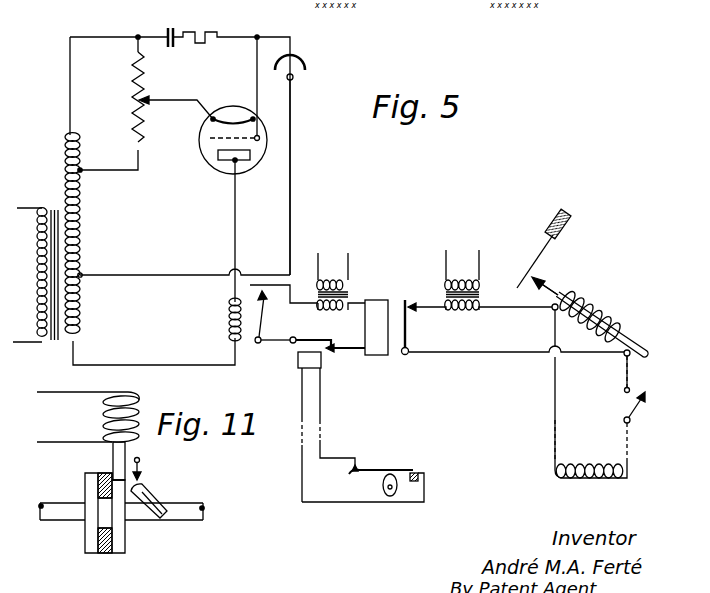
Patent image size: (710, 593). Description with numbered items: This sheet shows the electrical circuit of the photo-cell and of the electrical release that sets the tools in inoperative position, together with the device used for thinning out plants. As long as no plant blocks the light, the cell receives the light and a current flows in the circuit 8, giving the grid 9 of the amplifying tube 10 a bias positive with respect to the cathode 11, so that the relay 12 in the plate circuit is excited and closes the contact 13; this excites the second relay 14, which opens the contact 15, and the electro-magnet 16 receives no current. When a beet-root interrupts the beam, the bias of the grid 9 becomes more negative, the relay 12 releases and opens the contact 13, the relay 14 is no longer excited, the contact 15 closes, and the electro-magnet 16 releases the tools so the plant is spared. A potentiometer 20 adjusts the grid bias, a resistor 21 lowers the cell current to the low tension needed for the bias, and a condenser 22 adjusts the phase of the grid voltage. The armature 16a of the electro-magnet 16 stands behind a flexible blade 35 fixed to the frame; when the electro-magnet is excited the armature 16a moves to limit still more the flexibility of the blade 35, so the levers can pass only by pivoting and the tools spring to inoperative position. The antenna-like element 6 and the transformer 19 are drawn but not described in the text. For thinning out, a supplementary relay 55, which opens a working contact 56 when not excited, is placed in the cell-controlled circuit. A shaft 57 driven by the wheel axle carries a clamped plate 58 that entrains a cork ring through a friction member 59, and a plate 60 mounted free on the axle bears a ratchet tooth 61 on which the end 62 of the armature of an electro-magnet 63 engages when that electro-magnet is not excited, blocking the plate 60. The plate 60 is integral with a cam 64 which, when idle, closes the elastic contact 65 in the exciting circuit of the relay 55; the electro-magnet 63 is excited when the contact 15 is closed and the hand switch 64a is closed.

In FIG. 5, the antenna 6 is at (299, 58).
In FIG. 5, the circuit 8 is at (293, 170).
In FIG. 5, the grid 9 is at (210, 137).
In FIG. 5, the amplifying tube 10 is at (201, 156).
In FIG. 5, the cathode 11 is at (227, 122).
In FIG. 5, the relay 12 is at (228, 323).
In FIG. 5, the contact 13 is at (262, 318).
In FIG. 5, the second relay 14 is at (380, 349).
In FIG. 5, the contact 15 is at (410, 330).
In FIG. 5, the electro-magnet 16 is at (641, 346).
In FIG. 5, the armature 16a is at (558, 291).
In FIG. 5, the transformer 19 is at (46, 249).
In FIG. 5, the potentiometer 20 is at (145, 137).
In FIG. 5, the resistor 21 is at (207, 33).
In FIG. 5, the condenser 22 is at (174, 27).
In FIG. 5, the blade 35 is at (541, 254).
In FIG. 5, the supplementary relay 55 is at (316, 360).
In FIG. 5, the working contact 56 is at (312, 334).
In FIG. 11, the shaft 57 is at (52, 508).
In FIG. 11, the plate 58 is at (88, 531).
In FIG. 11, the friction member 59 is at (104, 555).
In FIG. 11, the plate 60 is at (118, 546).
In FIG. 11, the ratchet tooth 61 is at (111, 477).
In FIG. 11, the end of armature 62 is at (128, 455).
In FIG. 5, the electro-magnet 63 is at (575, 482).
In FIG. 11, the electro-magnet 63 is at (140, 403).
In FIG. 5, the cam 64 is at (383, 488).
In FIG. 11, the cam 64 is at (148, 518).
In FIG. 5, the hand switch 64a is at (645, 405).
In FIG. 5, the elastic contact 65 is at (368, 467).
In FIG. 11, the elastic contact 65 is at (160, 493).